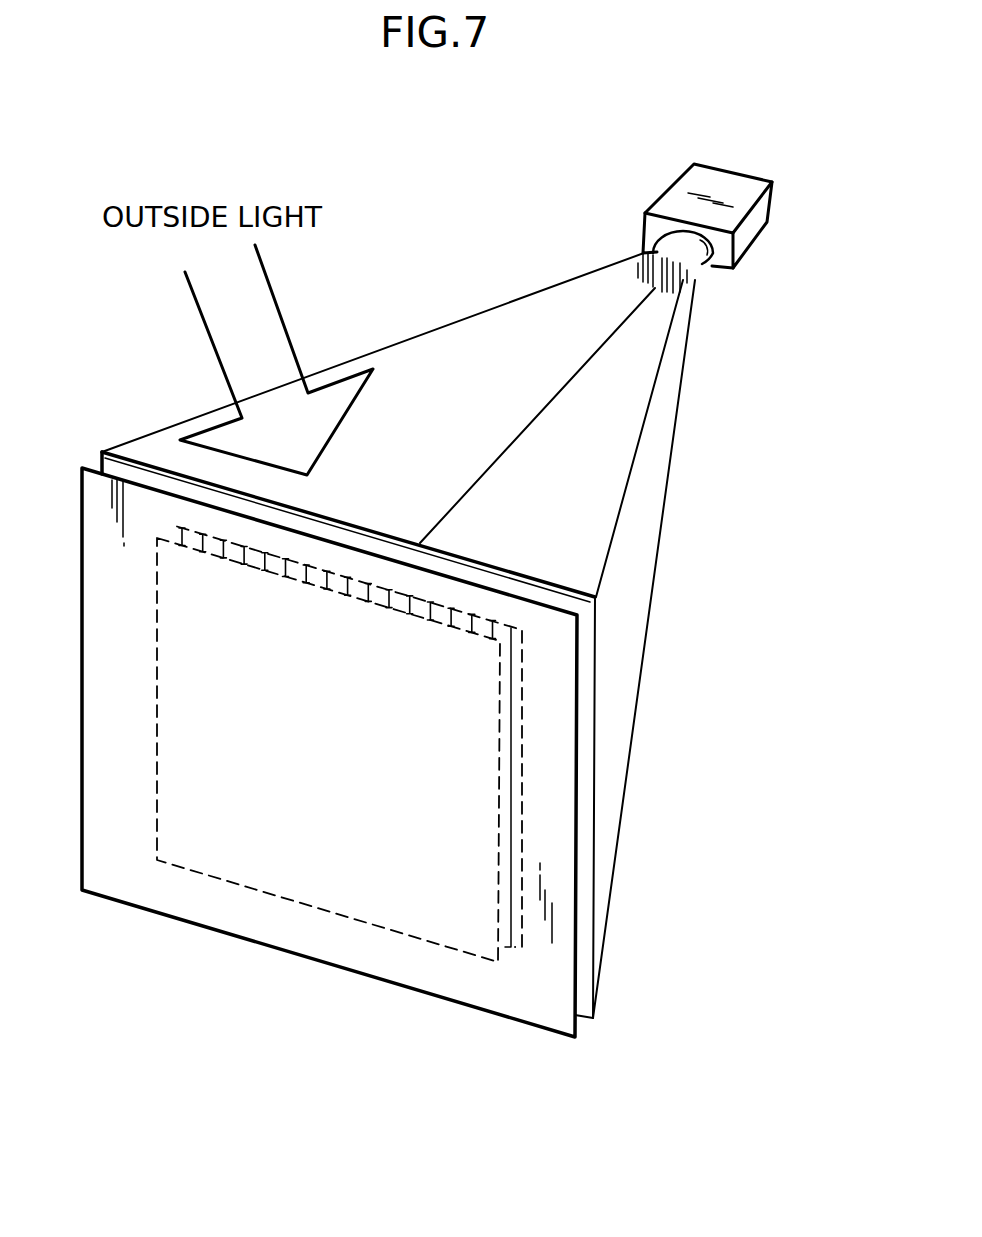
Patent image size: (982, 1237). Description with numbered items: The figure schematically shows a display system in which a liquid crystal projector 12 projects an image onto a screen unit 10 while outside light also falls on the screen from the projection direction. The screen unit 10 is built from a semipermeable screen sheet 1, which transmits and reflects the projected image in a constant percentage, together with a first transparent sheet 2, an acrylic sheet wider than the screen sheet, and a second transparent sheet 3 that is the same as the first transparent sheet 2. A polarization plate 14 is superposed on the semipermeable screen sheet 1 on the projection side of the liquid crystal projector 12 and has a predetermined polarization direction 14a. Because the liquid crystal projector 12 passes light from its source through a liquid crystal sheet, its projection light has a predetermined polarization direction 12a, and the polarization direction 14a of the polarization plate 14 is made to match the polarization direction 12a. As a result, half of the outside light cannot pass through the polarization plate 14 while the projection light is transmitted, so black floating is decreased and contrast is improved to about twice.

The semipermeable screen sheet 1 is at (155, 627).
The first transparent sheet 2 is at (577, 898).
The second transparent sheet 3 is at (595, 852).
The display device 10 is at (612, 1021).
The liquid crystal projector 12 is at (747, 230).
The polarization direction 12a is at (688, 275).
The polarization plate 14 is at (522, 668).
The polarization direction 14a is at (427, 613).